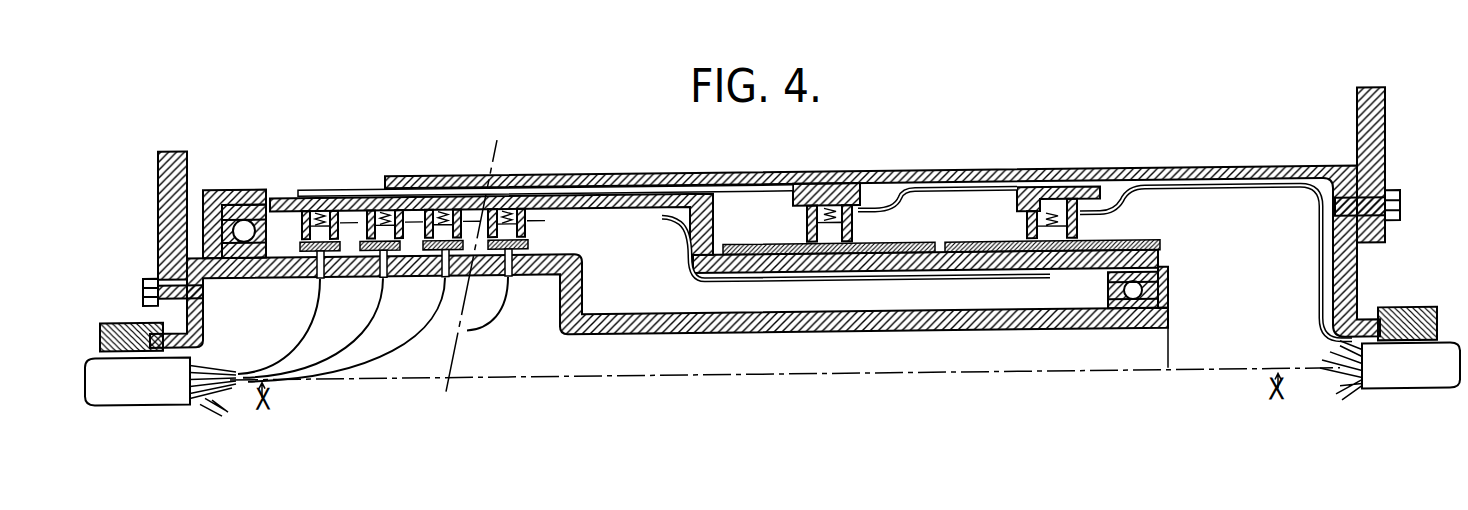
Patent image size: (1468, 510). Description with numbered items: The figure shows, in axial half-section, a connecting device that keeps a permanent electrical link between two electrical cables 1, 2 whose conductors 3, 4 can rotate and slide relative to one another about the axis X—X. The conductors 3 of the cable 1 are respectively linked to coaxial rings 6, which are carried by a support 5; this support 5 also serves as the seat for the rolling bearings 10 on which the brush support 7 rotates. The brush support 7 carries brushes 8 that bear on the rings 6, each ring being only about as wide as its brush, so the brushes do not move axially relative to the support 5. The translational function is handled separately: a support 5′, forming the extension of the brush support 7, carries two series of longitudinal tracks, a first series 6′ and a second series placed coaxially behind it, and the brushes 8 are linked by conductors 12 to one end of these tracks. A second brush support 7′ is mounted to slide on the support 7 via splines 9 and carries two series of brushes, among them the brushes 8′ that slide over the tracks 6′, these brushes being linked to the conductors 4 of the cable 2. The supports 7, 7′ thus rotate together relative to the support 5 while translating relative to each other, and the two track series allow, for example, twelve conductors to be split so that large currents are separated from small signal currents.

The electrical cable 1 is at (125, 391).
The electrical cable 2 is at (1405, 383).
The conductors 3 is at (222, 393).
The conductors 4 is at (1353, 392).
The support 5 is at (612, 334).
The support 5′ is at (992, 278).
The coaxial rings 6 is at (512, 251).
The longitudinal tracks 6′ is at (920, 253).
The brush support 7 is at (618, 204).
The brush support 7′ is at (1018, 181).
The brushes 8 is at (513, 233).
The brushes 8′ is at (830, 245).
The splines 9 is at (372, 194).
The rolling bearings 10 is at (1153, 312).
The conductors 12 is at (675, 235).